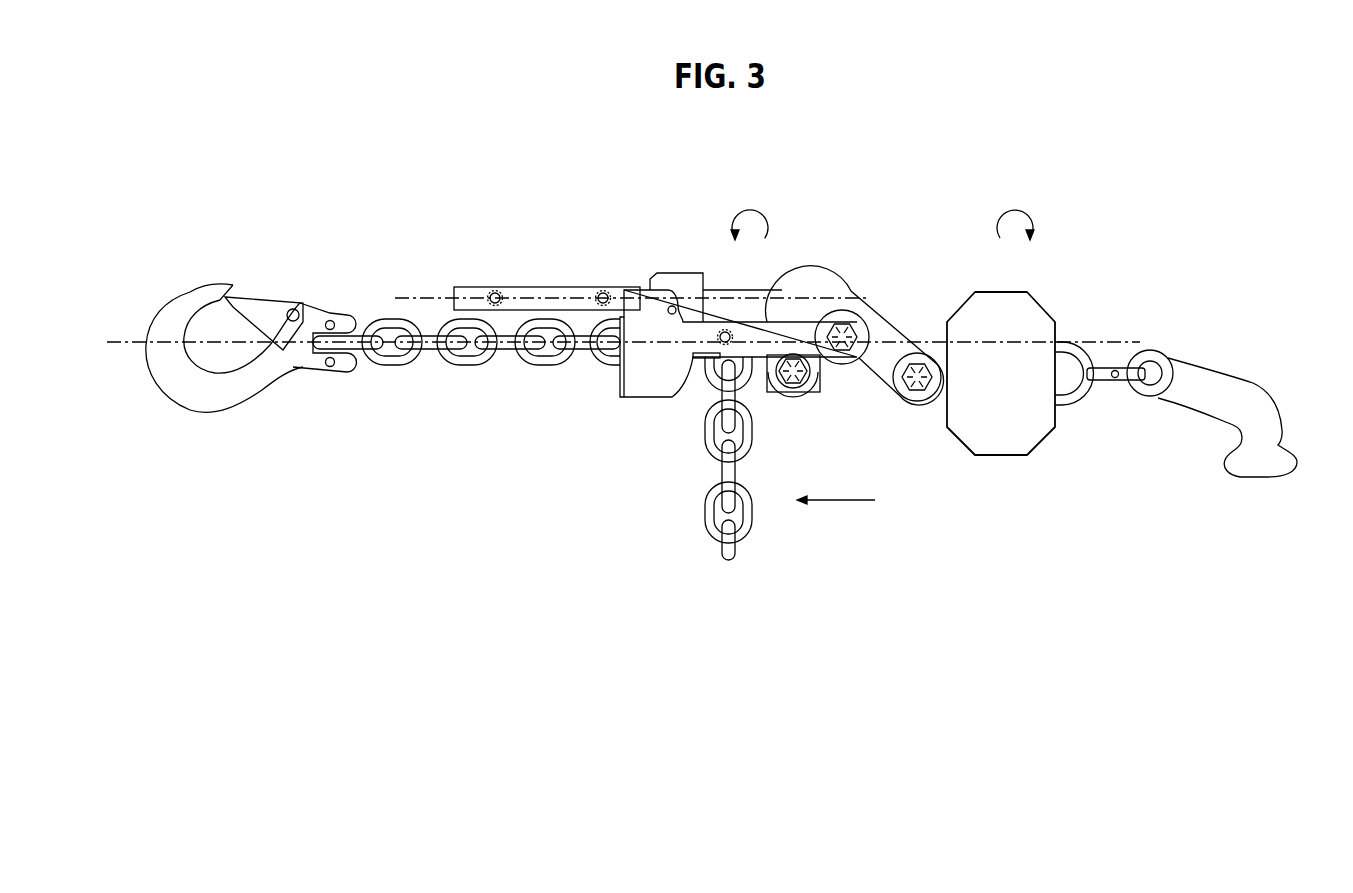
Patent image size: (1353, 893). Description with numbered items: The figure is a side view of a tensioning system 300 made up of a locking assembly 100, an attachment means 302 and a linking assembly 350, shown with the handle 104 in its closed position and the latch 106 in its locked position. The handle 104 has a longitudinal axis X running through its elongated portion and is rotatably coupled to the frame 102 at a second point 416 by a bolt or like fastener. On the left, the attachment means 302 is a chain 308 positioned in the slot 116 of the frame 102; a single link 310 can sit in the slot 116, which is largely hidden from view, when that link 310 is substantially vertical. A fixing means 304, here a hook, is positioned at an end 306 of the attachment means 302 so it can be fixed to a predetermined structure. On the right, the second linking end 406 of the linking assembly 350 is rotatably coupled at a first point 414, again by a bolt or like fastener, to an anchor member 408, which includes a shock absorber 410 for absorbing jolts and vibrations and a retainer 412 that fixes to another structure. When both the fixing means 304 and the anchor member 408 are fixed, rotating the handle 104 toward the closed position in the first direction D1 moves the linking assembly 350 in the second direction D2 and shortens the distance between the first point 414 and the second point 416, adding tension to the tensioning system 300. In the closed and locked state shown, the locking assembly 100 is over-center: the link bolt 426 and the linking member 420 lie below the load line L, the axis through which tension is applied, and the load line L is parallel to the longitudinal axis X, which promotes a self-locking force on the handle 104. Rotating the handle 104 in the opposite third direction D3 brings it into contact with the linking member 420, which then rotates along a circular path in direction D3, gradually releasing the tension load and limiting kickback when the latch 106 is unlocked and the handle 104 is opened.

The tensioning system 300 is at (316, 221).
The locking assembly 100 is at (576, 212).
The frame 102 is at (800, 390).
The handle 104 is at (526, 290).
The latch 106 is at (670, 274).
The slot 116 is at (648, 340).
The attachment means 302 is at (380, 308).
The fixing means 304 is at (246, 416).
The end 306 is at (341, 304).
The chain 308 is at (425, 366).
The link 310 is at (610, 360).
The linking assembly 350 is at (896, 250).
The second linking end 406 is at (917, 400).
The anchor member 408 is at (1132, 336).
The shock absorber 410 is at (1019, 461).
The retainer 412 is at (1213, 416).
The first point 414 is at (918, 362).
The second point 416 is at (844, 322).
The linking member 420 is at (822, 381).
The link bolt 426 is at (780, 385).
The load line L is at (126, 342).
The longitudinal axis X is at (476, 291).
The first direction D1 is at (762, 211).
The second direction D2 is at (836, 525).
The third direction D3 is at (1022, 212).